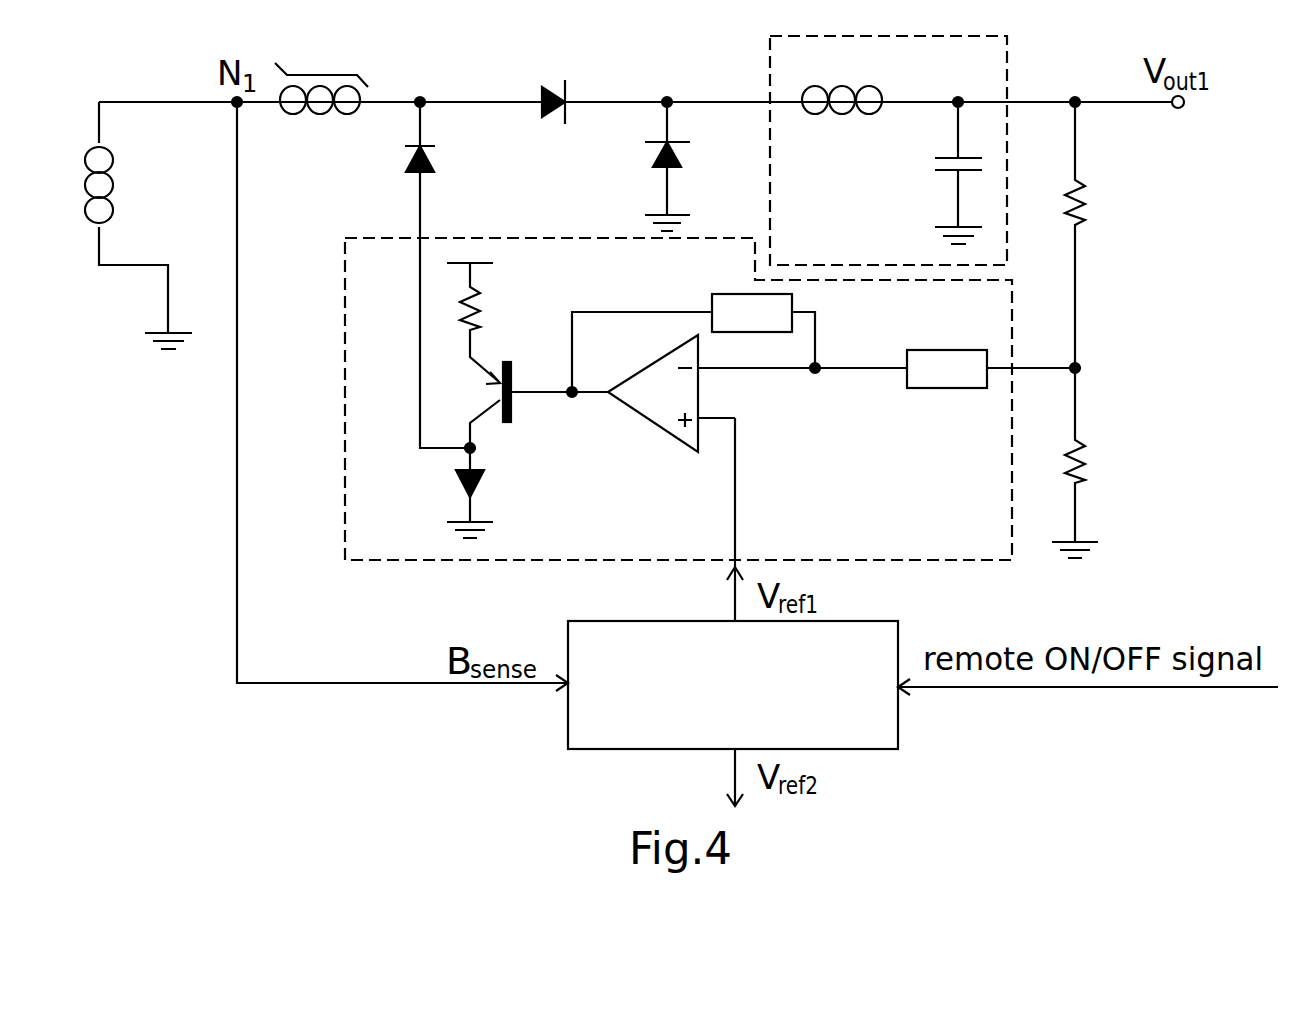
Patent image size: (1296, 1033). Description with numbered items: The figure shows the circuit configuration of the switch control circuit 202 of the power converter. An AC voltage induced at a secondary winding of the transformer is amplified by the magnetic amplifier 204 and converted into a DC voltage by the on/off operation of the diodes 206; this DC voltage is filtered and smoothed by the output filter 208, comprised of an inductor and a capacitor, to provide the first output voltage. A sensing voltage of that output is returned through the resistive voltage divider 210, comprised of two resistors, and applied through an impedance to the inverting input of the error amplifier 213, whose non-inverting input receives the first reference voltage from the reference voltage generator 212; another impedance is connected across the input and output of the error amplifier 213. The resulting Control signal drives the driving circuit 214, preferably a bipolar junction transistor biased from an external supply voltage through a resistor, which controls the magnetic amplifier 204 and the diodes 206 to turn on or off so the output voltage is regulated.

The switch control circuit 202 is at (357, 302).
The magnetic amplifier 204 is at (328, 65).
The diodes 206 is at (552, 80).
The output filter 208 is at (993, 87).
The voltage divider 210 is at (1112, 257).
The reference voltage generator 212 is at (866, 635).
The error amplifier 213 is at (662, 417).
The driving circuit 214 is at (515, 397).